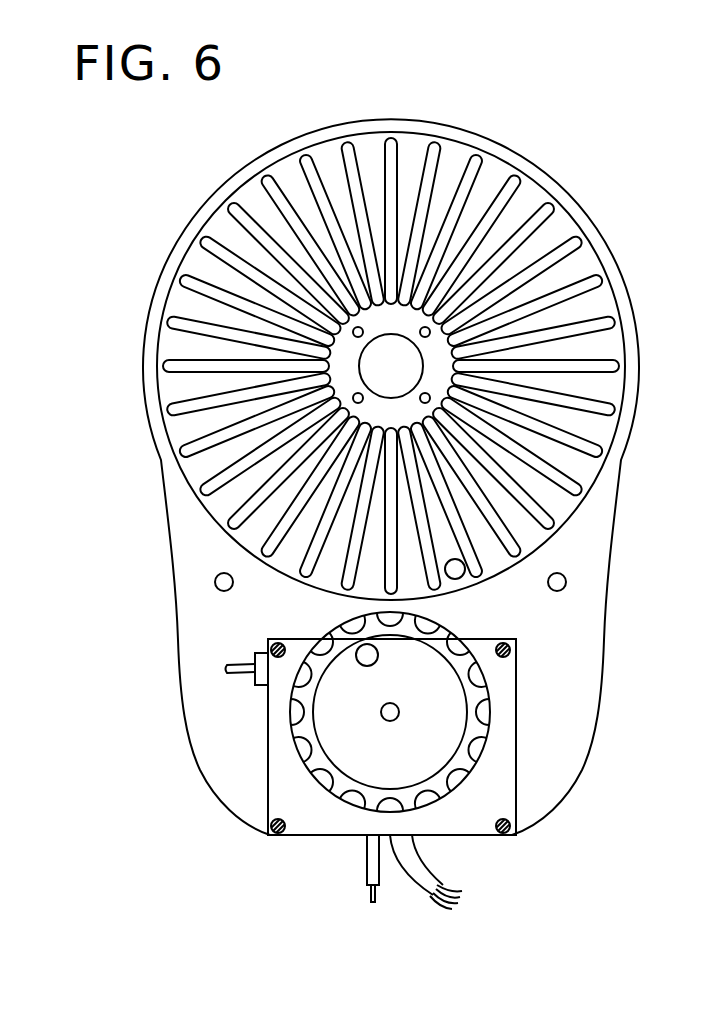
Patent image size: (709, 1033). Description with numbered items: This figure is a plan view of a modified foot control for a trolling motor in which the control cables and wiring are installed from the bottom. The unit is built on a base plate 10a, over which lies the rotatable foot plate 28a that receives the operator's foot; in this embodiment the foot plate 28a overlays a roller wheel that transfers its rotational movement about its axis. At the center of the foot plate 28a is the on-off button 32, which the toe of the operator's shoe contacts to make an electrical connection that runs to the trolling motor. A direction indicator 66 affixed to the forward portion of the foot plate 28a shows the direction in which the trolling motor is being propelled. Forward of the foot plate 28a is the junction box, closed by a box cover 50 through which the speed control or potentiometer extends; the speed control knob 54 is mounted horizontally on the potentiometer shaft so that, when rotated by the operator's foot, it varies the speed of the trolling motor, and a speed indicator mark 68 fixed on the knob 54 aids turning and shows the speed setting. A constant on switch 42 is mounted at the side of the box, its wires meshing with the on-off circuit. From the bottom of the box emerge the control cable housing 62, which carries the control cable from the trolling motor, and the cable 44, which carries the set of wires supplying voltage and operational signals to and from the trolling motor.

The base plate 10a is at (208, 607).
The foot plate 28a is at (201, 481).
The on-off button 32 is at (391, 365).
The direction indicator 66 is at (462, 576).
The box cover 50 is at (502, 798).
The speed control knob 54 is at (448, 712).
The speed indicator mark 68 is at (370, 656).
The constant on switch 42 is at (225, 672).
The control cable housing 62 is at (373, 862).
The cable 44 is at (437, 887).